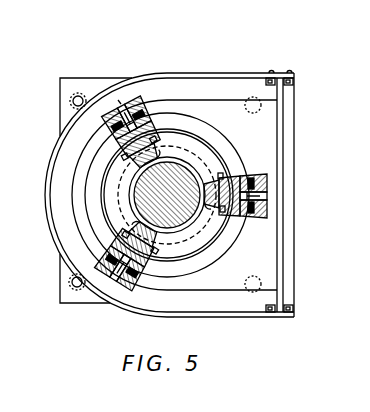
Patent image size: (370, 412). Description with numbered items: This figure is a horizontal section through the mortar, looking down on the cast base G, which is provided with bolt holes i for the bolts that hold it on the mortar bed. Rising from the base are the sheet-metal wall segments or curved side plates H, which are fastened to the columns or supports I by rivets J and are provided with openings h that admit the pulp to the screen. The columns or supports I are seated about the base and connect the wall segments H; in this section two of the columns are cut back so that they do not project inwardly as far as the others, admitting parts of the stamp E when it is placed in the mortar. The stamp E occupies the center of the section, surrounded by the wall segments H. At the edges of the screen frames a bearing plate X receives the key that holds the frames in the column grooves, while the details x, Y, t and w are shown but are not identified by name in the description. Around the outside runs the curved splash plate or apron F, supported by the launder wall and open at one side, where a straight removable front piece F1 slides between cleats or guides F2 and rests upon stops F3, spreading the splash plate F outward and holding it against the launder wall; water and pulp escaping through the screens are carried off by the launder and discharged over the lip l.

The base G is at (72, 303).
The bolt holes i is at (70, 106).
The curved splash plate F is at (216, 73).
The front piece F1 is at (280, 108).
The cleats F2 is at (286, 90).
The stops F3 is at (295, 82).
The wall segments H is at (213, 138).
The rivets J is at (162, 114).
The openings h is at (226, 230).
The stamp E is at (178, 170).
The columns I is at (122, 103).
The bearing plate X is at (148, 110).
The jaw block lower part x is at (110, 130).
The jaw stem Y is at (152, 141).
The clip t is at (126, 168).
The pin w is at (118, 100).
The lip l is at (294, 245).